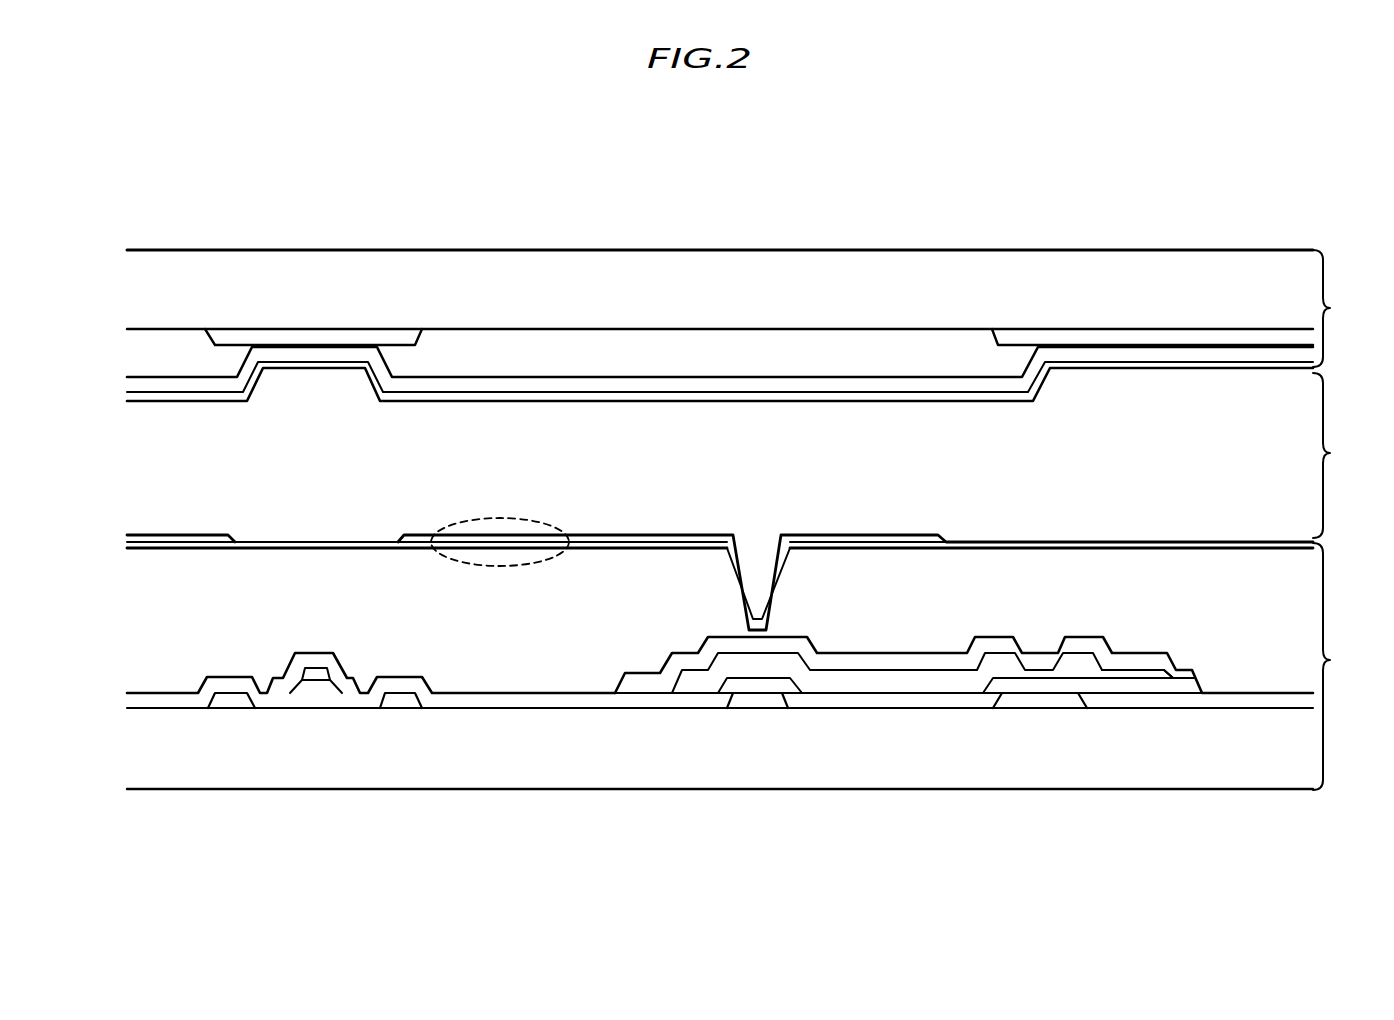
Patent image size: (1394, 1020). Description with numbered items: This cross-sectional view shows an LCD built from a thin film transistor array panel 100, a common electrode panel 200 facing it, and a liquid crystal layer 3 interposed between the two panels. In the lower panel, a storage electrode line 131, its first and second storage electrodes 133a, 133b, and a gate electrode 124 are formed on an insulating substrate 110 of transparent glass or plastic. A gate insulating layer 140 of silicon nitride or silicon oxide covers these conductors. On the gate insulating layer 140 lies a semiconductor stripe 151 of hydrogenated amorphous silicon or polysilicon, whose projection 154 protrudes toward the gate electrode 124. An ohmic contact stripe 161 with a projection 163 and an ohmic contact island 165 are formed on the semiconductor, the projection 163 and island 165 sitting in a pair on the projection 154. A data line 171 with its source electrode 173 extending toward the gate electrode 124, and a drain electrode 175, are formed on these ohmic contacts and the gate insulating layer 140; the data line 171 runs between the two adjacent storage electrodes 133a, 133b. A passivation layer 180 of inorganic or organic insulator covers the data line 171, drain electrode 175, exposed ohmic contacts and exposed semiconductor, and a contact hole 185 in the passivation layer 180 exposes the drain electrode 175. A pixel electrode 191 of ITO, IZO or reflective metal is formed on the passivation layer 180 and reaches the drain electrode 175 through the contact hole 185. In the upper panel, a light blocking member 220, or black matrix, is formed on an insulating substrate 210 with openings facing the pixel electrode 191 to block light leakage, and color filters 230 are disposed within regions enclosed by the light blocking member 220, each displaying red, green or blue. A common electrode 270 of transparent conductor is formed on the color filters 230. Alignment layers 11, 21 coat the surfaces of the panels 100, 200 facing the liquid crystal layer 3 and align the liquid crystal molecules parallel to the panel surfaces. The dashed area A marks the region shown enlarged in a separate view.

The common electrode panel 200 is at (750, 327).
The insulating substrate 210 is at (814, 268).
The light blocking member 220 is at (313, 337).
The color filter 230 is at (667, 349).
The common electrode 270 is at (617, 383).
The alignment layer 21 is at (712, 397).
The liquid crystal layer 3 is at (1331, 455).
The thin film transistor array panel 100 is at (749, 523).
The area A is at (497, 518).
The pixel electrode 191 is at (175, 548).
The alignment layer 11 is at (314, 545).
The contact hole 185 is at (737, 590).
The insulating substrate 110 is at (612, 772).
The gate insulating layer 140 is at (158, 705).
The passivation layer 180 is at (538, 668).
The second storage electrode 133b is at (228, 702).
The first storage electrode 133a is at (398, 702).
The storage electrode line 131 is at (748, 702).
The gate electrode 124 is at (1033, 700).
The semiconductor stripe 151 is at (307, 685).
The ohmic contact stripe 161 is at (317, 673).
The data line 171 is at (347, 685).
The drain electrode 175 is at (903, 660).
The source electrode 173 is at (1145, 662).
The ohmic contact island 165 is at (840, 673).
The projection 154 is at (1180, 685).
The projection 163 is at (1127, 670).